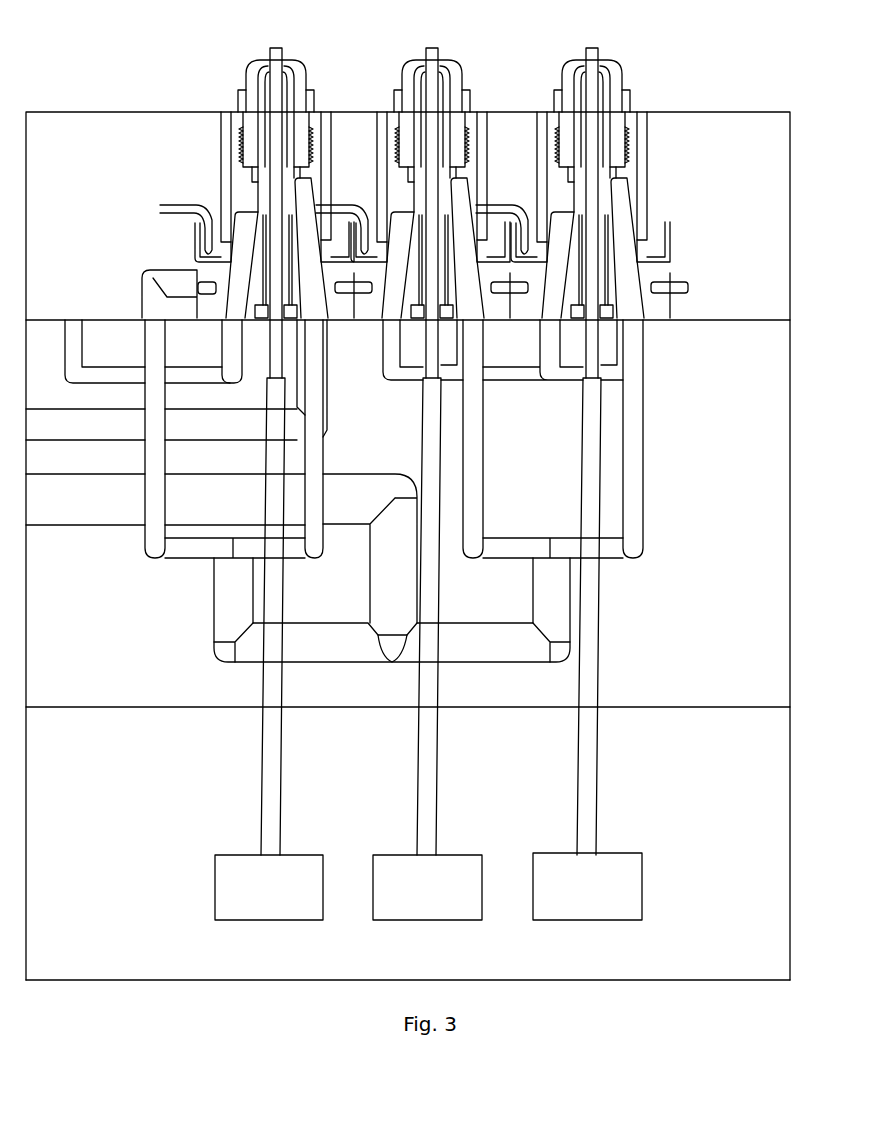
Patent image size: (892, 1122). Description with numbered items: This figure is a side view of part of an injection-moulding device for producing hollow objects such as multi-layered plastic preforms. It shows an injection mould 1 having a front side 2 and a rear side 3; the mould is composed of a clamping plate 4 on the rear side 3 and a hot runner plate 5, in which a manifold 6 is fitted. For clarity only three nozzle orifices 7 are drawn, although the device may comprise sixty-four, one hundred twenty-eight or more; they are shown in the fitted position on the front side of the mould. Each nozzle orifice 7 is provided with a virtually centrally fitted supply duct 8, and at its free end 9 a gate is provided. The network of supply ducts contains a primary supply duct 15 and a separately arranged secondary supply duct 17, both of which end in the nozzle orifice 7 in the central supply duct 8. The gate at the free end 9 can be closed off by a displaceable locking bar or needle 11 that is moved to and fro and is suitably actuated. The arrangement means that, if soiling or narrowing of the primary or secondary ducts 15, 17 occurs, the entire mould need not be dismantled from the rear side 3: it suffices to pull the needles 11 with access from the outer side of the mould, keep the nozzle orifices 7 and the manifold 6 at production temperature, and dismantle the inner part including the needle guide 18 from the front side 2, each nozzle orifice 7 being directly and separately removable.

The injection mould 1 is at (429, 523).
The front side 2 is at (98, 112).
The rear side 3 is at (716, 983).
The clamping plate 4 is at (792, 804).
The hot runner plate 5 is at (792, 572).
The manifold 6 is at (695, 487).
The nozzle orifice 7 is at (422, 430).
The supply duct 8 is at (555, 604).
The free end 9 is at (617, 63).
The needle 11 is at (639, 599).
The primary supply duct 15 is at (668, 248).
The secondary supply duct 17 is at (165, 237).
The needle guide 18 is at (655, 260).